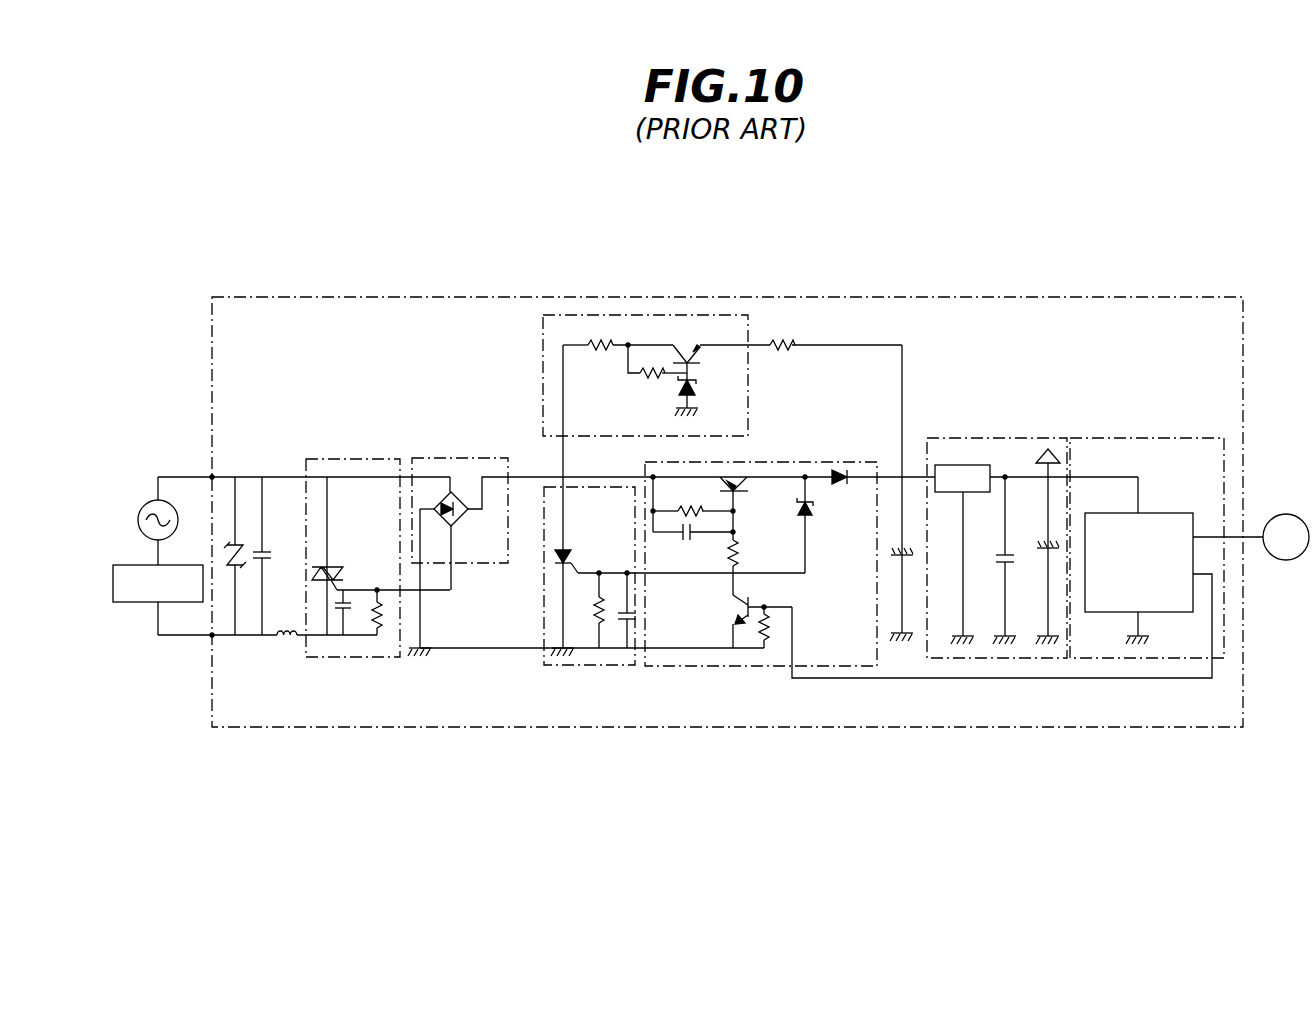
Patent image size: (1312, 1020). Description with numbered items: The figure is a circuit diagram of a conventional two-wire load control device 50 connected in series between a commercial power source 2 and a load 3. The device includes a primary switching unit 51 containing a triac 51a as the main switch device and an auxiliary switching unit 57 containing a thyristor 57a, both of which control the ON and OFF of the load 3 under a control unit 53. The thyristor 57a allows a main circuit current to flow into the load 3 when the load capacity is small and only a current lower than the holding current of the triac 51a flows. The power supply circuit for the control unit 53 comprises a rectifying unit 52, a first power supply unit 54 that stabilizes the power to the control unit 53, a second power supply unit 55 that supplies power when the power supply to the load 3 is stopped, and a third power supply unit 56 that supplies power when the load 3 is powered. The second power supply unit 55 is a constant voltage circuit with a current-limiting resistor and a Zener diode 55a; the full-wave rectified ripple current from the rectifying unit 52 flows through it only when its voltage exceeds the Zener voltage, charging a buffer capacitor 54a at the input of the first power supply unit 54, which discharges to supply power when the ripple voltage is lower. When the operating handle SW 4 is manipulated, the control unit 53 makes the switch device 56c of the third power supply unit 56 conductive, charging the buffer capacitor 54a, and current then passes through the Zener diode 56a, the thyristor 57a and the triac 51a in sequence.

The commercial power source 2 is at (142, 507).
The load 3 is at (128, 565).
The operating handle SW 4 is at (1286, 560).
The two-wire load control device 50 is at (558, 207).
The primary switching unit 51 is at (378, 486).
The triac 51a is at (326, 568).
The rectifying unit 52 is at (488, 458).
The control unit 53 is at (1182, 513).
The first power supply unit 54 is at (1000, 438).
The buffer capacitor 54a is at (907, 567).
The second power supply unit 55 is at (722, 328).
The Zener diode 55a is at (696, 391).
The third power supply unit 56 is at (928, 511).
The Zener diode 56a is at (810, 514).
The switch device 56c is at (746, 620).
The auxiliary switching unit 57 is at (649, 562).
The thyristor 57a is at (553, 566).